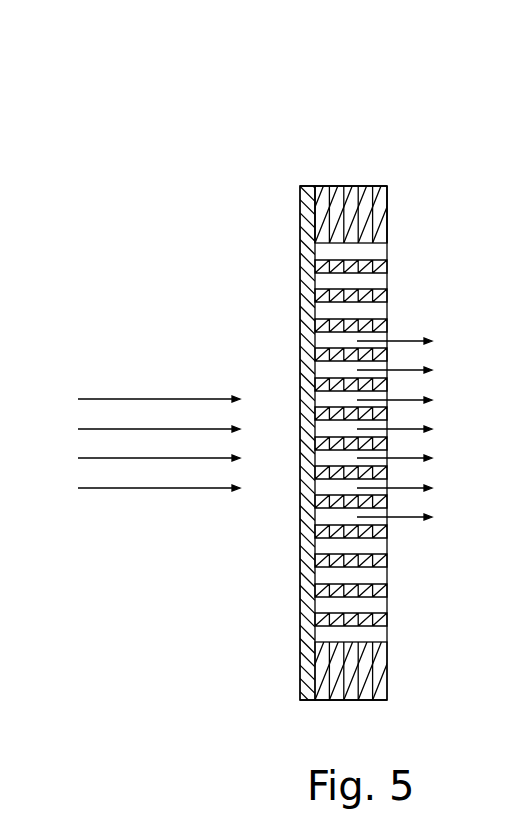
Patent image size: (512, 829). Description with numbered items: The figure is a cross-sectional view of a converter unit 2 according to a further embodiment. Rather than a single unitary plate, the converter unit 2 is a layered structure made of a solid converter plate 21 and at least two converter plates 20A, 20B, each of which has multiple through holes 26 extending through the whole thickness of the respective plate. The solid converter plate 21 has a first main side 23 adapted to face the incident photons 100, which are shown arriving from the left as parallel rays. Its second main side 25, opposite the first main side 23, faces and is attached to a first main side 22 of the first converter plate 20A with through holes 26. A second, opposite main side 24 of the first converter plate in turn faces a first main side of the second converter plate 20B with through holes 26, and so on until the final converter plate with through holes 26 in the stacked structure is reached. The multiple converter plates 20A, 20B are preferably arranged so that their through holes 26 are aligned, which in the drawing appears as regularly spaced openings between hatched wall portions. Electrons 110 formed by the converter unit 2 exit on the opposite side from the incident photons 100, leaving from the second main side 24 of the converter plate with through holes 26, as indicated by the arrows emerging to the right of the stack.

The converter unit 2 is at (248, 97).
The solid converter plate 21 is at (307, 186).
The first converter plate 20A is at (318, 186).
The second converter plate 20B is at (340, 186).
The first main side 23 is at (300, 210).
The second main side 24 is at (333, 212).
The second main side 25 is at (323, 693).
The through holes 26 is at (387, 308).
The first main side 22 is at (315, 702).
The incident photons 100 is at (152, 399).
The electrons 110 is at (412, 427).